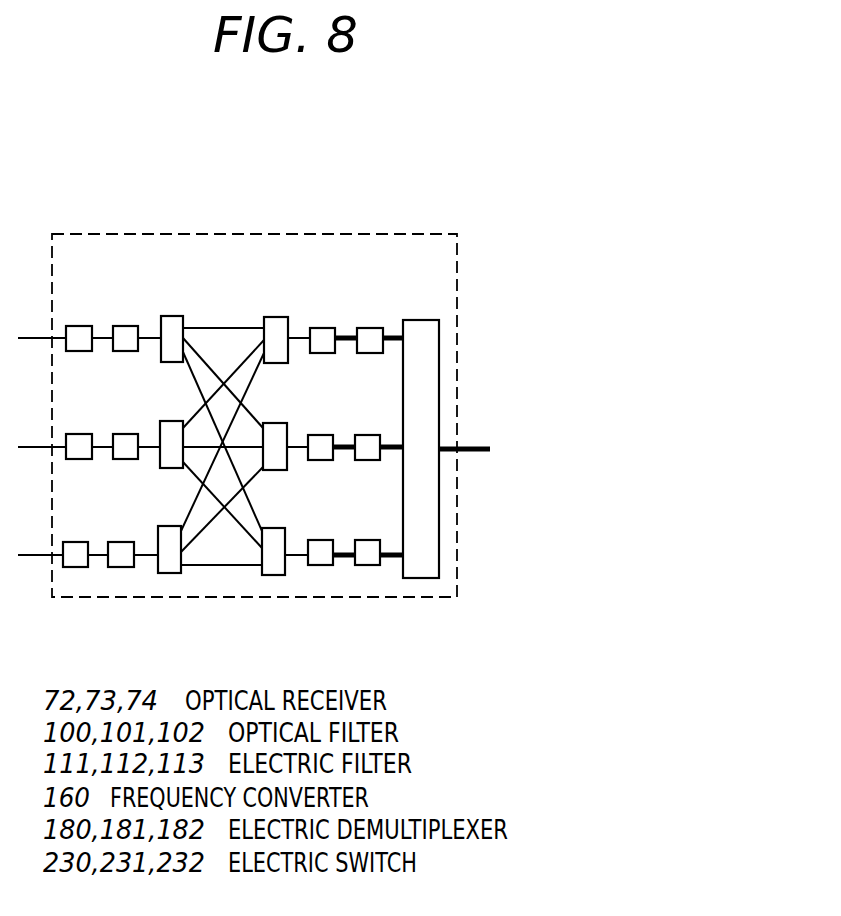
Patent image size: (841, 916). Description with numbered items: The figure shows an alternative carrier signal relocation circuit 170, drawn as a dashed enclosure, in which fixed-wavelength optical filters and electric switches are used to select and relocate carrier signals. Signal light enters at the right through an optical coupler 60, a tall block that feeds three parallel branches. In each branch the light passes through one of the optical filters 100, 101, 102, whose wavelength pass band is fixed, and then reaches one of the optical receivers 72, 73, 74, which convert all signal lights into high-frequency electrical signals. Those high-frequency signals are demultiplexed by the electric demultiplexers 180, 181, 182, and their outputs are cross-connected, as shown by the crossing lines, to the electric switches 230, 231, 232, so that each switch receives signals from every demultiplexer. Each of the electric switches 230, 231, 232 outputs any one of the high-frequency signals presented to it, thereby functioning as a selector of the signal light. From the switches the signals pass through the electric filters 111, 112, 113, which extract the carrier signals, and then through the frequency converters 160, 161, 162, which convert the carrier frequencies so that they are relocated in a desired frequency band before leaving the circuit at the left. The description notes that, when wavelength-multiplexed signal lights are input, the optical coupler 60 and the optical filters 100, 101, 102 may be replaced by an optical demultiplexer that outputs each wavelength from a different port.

The optical coupler 60 is at (424, 325).
The optical receiver 72 is at (322, 328).
The optical receiver 73 is at (321, 435).
The optical receiver 74 is at (321, 540).
The optical filter 100 is at (372, 328).
The optical filter 101 is at (372, 435).
The optical filter 102 is at (372, 540).
The electric filter 111 is at (122, 326).
The electric filter 112 is at (122, 434).
The electric filter 113 is at (120, 542).
The frequency converter 160 is at (80, 326).
The frequency converter 161 is at (80, 434).
The frequency converter 162 is at (78, 542).
The carrier signal relocation circuit 170 is at (246, 237).
The electric demultiplexer 180 is at (276, 317).
The electric demultiplexer 181 is at (275, 423).
The electric demultiplexer 182 is at (273, 528).
The electric switch 230 is at (171, 316).
The electric switch 231 is at (170, 421).
The electric switch 232 is at (168, 526).